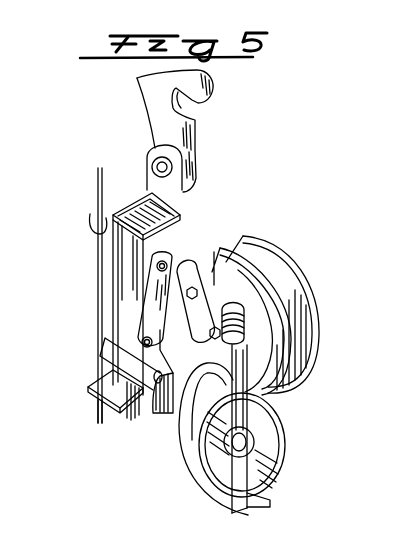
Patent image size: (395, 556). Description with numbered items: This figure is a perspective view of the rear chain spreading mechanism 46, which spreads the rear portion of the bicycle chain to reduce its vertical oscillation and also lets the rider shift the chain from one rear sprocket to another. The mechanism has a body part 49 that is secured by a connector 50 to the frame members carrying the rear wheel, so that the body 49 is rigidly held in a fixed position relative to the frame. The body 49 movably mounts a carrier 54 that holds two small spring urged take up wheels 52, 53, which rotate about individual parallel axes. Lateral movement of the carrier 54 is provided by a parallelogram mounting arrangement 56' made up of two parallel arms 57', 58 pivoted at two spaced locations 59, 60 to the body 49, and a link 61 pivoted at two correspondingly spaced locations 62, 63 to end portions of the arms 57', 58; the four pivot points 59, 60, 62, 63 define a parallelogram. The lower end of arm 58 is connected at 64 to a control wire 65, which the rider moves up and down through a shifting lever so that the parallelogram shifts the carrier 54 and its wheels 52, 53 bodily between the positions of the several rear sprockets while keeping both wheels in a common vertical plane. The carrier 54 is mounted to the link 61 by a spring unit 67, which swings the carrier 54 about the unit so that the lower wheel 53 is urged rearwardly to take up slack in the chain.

The connector 50 is at (214, 91).
The spreading mechanism 46 is at (97, 210).
The body part 49 is at (112, 269).
The control wire 65 is at (97, 414).
The parallelogram mounting arrangement 56' is at (169, 294).
The connection of arm to control wire 64 is at (90, 386).
The arm 57' is at (108, 299).
The pivot location 62 is at (164, 264).
The pivot location 59 is at (142, 340).
The pivot location 60 is at (113, 368).
The arm 58 is at (197, 439).
The link 61 is at (192, 287).
The spring unit 67 is at (223, 316).
The carrier 54 is at (298, 286).
The pivot location 63 is at (196, 291).
The take up wheel 52 is at (268, 362).
The take up wheel 53 is at (290, 440).